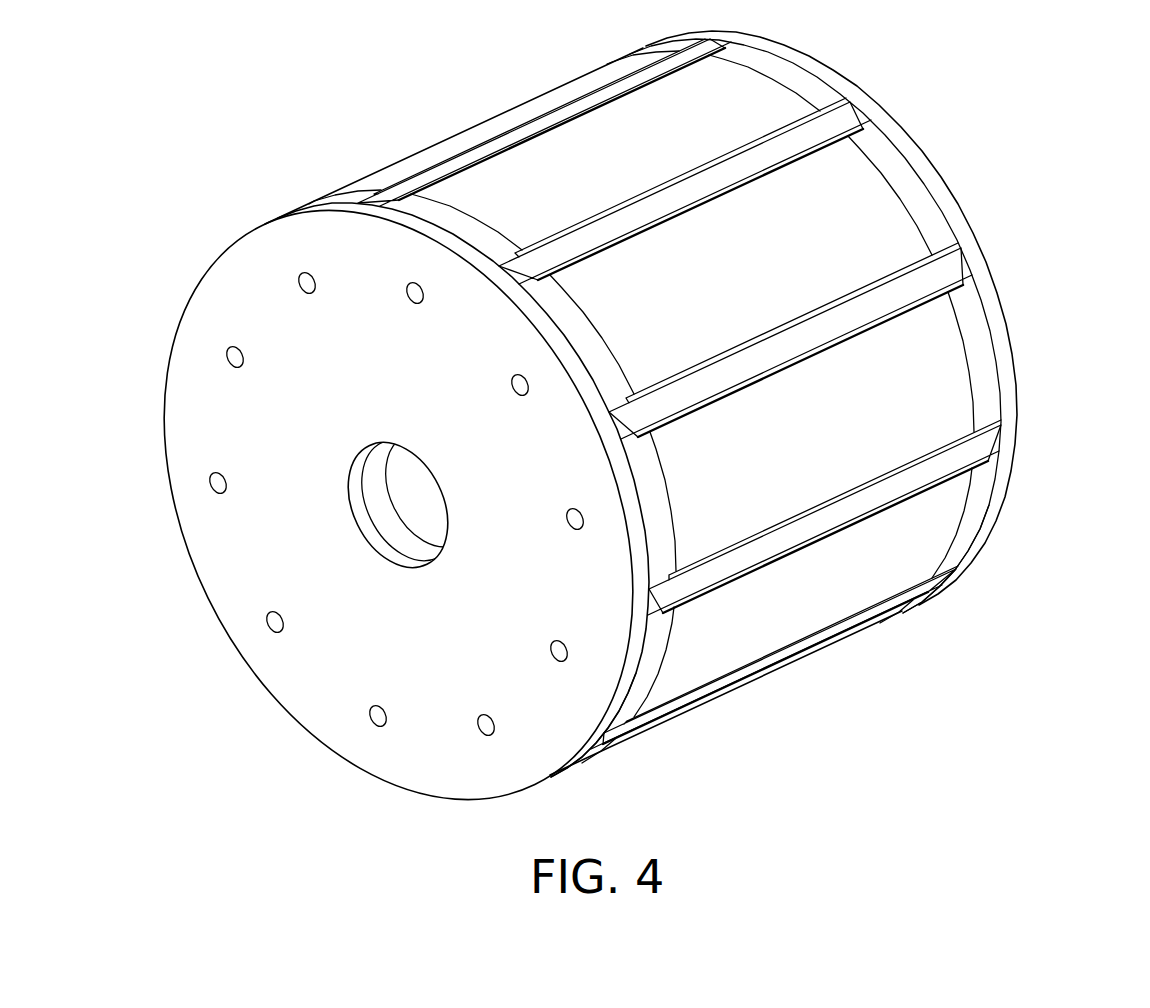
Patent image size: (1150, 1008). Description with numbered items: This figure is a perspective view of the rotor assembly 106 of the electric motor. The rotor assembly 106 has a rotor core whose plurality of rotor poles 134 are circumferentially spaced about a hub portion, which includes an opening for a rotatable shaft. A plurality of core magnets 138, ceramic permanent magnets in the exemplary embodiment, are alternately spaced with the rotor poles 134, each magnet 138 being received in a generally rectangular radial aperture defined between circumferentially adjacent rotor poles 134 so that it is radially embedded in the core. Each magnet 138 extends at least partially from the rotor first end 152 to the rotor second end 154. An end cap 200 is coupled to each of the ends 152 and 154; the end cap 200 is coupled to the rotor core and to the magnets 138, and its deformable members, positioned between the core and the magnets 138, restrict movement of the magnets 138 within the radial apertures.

The rotor assembly 106 is at (222, 130).
The end cap 200 is at (197, 337).
The rotor poles 134 is at (976, 510).
The core magnets 138 is at (948, 468).
The rotor first end 152 is at (404, 804).
The rotor second end 154 is at (980, 568).